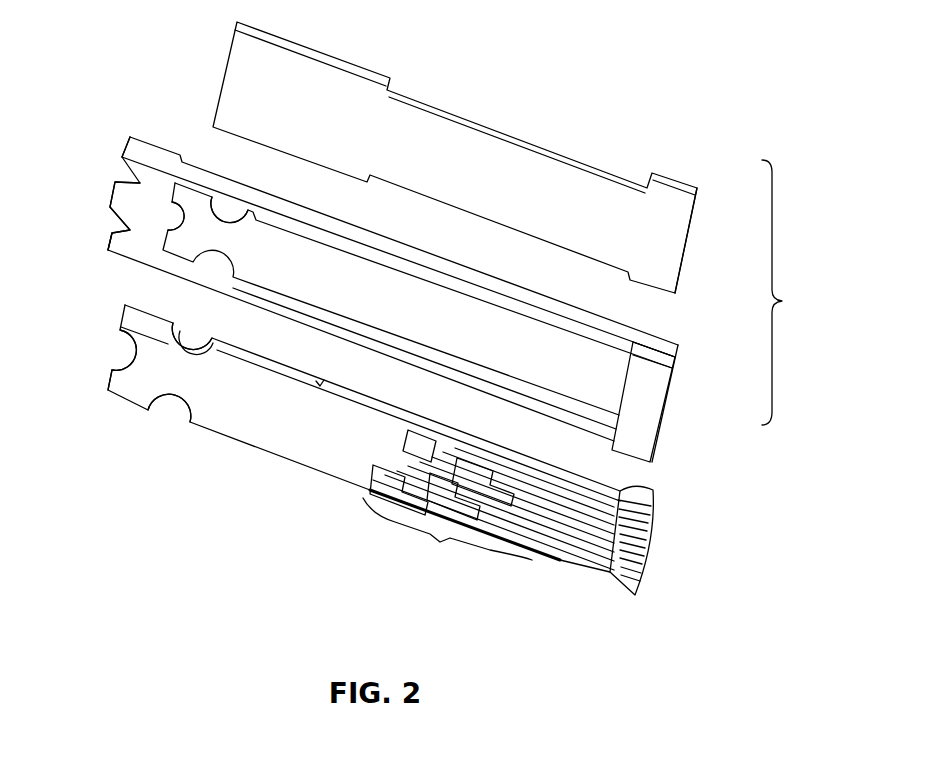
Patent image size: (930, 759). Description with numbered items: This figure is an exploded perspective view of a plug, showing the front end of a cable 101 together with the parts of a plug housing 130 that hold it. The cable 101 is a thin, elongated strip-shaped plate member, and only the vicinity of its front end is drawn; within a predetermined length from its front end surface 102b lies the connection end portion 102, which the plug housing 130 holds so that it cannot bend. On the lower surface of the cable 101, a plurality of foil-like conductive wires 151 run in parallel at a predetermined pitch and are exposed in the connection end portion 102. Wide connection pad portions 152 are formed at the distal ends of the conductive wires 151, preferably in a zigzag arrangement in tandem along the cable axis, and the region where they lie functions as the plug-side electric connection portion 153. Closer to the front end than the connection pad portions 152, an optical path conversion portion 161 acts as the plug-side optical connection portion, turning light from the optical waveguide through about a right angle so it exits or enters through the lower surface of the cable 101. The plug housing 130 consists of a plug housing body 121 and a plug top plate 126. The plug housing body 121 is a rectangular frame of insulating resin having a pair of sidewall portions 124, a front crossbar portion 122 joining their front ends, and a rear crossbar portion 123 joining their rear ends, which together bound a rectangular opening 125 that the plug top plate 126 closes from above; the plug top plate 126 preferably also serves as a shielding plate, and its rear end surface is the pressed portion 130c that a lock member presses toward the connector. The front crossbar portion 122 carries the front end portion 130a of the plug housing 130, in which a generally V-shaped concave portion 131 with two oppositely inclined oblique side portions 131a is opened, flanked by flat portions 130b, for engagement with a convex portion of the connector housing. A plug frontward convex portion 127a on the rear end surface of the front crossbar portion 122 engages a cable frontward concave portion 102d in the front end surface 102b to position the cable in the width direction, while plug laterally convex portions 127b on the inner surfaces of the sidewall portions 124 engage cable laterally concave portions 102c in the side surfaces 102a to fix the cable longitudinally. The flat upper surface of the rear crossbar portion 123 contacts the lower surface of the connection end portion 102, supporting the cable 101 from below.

The cable 101 is at (598, 575).
The connection end portion 102 is at (299, 468).
The side surfaces 102a is at (222, 340).
The front end surface 102b is at (107, 382).
The cable laterally concave portions 102c is at (172, 411).
The cable frontward concave portion 102d is at (118, 349).
The plug housing body 121 is at (679, 343).
The front crossbar portion 122 is at (153, 176).
The rear crossbar portion 123 is at (661, 402).
The sidewall portions 124 is at (435, 251).
The opening 125 is at (508, 322).
The plug top plate 126 is at (691, 185).
The plug frontward convex portion 127a is at (184, 226).
The plug laterally convex portions 127b is at (251, 222).
The plug housing 130 is at (792, 292).
The front end portion 130a is at (126, 155).
The flat portions 130b is at (104, 246).
The pressed portion 130c is at (697, 236).
The concave portion 131 is at (112, 215).
The oblique side portions 131a is at (118, 243).
The conductive wires 151 is at (620, 492).
The connection pad portions 152 is at (428, 438).
The plug-side electric connection portion 153 is at (488, 509).
The optical path conversion portion 161 is at (321, 383).